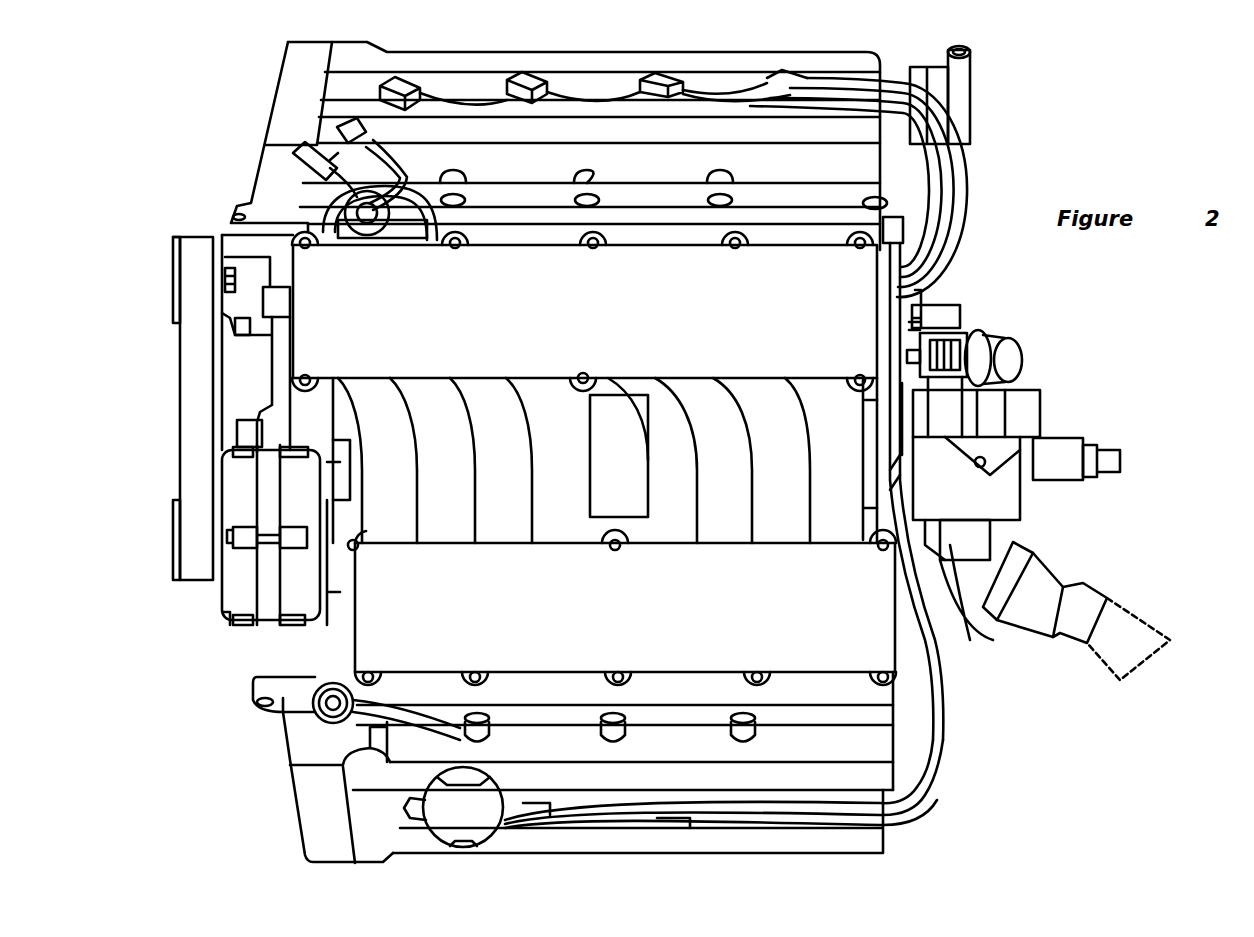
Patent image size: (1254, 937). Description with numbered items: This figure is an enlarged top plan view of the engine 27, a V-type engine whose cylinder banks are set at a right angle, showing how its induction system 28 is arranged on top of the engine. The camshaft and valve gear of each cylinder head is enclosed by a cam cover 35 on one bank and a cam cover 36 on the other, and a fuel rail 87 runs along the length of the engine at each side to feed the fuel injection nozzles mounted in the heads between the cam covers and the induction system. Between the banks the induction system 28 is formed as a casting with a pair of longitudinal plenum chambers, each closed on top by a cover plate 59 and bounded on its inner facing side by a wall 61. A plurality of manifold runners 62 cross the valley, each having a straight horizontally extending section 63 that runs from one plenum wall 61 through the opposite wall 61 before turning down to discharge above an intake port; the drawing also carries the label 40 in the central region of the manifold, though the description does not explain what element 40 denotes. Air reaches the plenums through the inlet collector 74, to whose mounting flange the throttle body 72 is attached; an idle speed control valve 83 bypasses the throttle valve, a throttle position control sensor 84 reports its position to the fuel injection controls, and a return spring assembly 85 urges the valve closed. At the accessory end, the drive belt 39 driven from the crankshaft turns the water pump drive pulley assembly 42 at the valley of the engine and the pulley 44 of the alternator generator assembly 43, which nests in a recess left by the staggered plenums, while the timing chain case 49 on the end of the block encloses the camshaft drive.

The engine 27 is at (283, 841).
The induction system 28 is at (205, 660).
The cam cover 35 is at (572, 843).
The cam cover 36 is at (608, 62).
The drive belt 39 is at (188, 437).
The intake plenum 40 is at (610, 410).
The drive pulley assembly 42 is at (172, 275).
The alternator generator assembly 43 is at (293, 577).
The pulley 44 is at (170, 540).
The timing chain case 49 is at (277, 373).
The cover plate 59 is at (715, 285).
The wall 61 is at (530, 383).
The manifold runner 62 is at (417, 400).
The straight horizontally extending section 63 is at (425, 560).
The throttle body 72 is at (1020, 412).
The inlet collector 74 is at (880, 428).
The idle speed control valve 83 is at (987, 457).
The throttle position control sensor 84 is at (990, 560).
The return spring assembly 85 is at (977, 330).
The fuel rail 87 is at (812, 232).